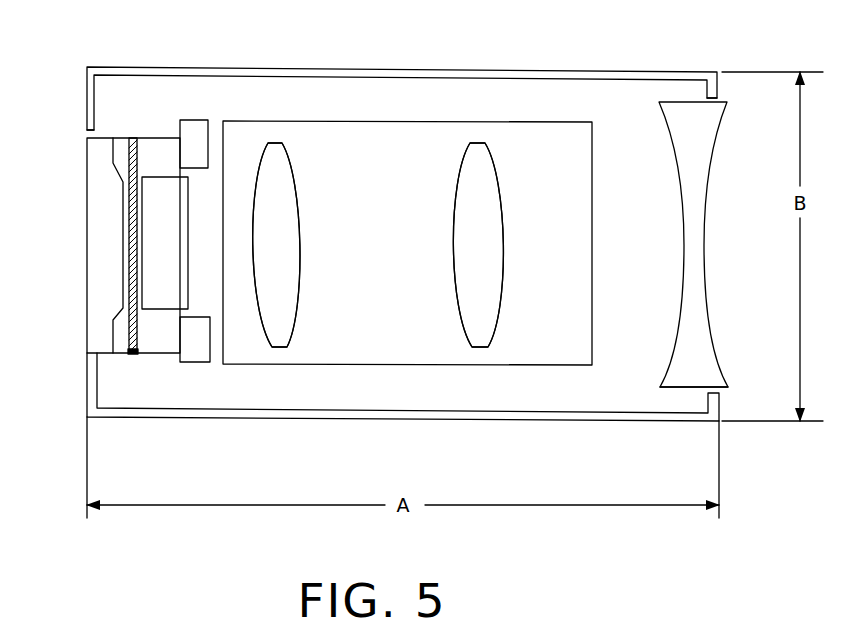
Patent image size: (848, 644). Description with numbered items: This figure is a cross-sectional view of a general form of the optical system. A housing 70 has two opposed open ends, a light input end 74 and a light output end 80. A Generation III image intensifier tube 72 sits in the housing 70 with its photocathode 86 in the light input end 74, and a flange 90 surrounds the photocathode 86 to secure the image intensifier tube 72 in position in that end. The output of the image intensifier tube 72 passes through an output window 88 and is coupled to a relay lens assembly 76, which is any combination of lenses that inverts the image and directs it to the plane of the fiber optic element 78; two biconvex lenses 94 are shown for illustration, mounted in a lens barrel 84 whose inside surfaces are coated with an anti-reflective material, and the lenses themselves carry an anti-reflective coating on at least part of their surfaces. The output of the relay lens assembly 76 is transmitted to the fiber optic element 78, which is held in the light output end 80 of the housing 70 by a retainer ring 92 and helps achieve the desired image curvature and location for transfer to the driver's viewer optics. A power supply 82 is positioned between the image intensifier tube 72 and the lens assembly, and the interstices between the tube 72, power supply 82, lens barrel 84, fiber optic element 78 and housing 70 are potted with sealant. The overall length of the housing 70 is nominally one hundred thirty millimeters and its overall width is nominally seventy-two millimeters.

The housing 70 is at (673, 72).
The image intensifier tube 72 is at (122, 354).
The light input end 74 is at (78, 170).
The relay lens assembly 76 is at (447, 352).
The fiber optic element 78 is at (697, 287).
The light output end 80 is at (732, 366).
The power supply 82 is at (193, 128).
The lens barrel 84 is at (556, 367).
The photocathode 86 is at (100, 232).
The output window 88 is at (178, 282).
The flange 90 is at (87, 92).
The retainer ring 92 is at (717, 88).
The biconvex lenses 94 is at (277, 152).